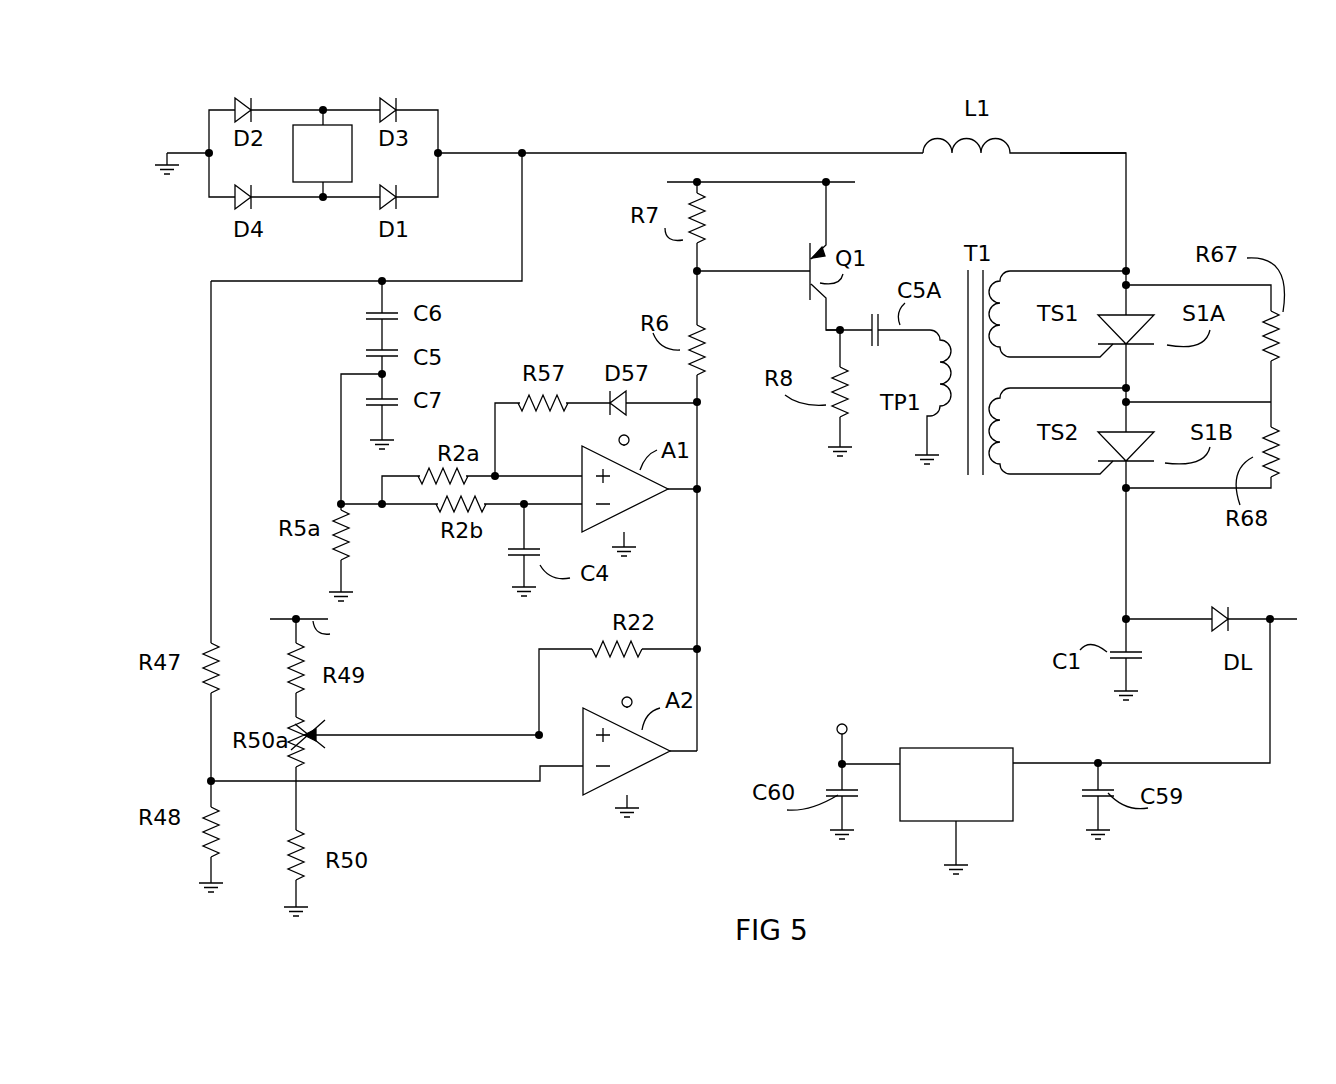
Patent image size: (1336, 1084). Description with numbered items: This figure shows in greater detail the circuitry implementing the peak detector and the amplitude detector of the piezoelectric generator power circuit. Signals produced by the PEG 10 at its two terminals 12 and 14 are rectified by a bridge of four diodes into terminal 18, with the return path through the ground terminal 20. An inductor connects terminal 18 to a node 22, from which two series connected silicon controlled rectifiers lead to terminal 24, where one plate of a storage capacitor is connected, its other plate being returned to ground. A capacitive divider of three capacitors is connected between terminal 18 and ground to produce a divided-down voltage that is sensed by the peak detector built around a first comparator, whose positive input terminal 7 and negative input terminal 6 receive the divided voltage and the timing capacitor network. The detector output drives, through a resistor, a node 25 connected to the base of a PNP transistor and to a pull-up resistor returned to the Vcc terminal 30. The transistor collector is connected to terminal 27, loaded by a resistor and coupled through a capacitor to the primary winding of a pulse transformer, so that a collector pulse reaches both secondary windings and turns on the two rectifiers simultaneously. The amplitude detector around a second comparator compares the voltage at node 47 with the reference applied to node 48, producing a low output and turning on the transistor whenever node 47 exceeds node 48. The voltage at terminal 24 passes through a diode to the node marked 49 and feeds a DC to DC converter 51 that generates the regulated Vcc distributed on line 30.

The PEG 10 is at (337, 125).
The terminal 12 is at (323, 199).
The terminal 14 is at (323, 108).
The terminal 18 is at (522, 150).
The ground terminal 20 is at (640, 525).
The node 22 is at (1095, 153).
The terminal 24 is at (1128, 619).
The node 25 is at (693, 271).
The terminal 27 is at (838, 331).
The terminal 30 is at (572, 467).
The node 47 is at (208, 770).
The node 48 is at (380, 743).
The regulator input node 49 is at (1272, 612).
The DC to DC converter 51 is at (912, 749).
The negative input terminal 6 is at (563, 504).
The positive input terminal 7 is at (550, 476).